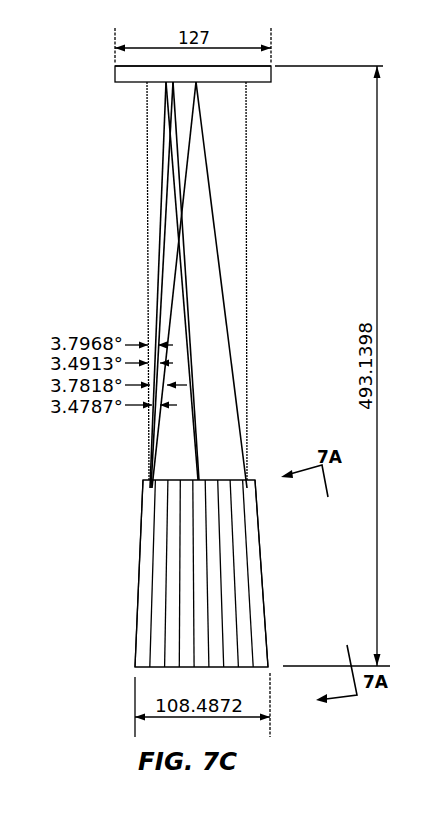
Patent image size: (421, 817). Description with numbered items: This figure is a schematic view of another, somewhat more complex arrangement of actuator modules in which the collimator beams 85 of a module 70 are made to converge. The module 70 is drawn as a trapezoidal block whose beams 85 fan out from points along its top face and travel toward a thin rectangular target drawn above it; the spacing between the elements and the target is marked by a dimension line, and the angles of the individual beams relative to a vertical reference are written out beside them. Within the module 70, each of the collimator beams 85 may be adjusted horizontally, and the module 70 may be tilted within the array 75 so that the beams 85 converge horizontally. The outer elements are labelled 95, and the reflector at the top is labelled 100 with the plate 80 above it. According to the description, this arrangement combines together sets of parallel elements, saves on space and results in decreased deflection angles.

The module 70 is at (258, 565).
The array 75 is at (183, 606).
The test target plate 80 is at (110, 60).
The collimator beams 85 is at (185, 128).
The edge transducer elements 95 is at (139, 667).
The reflector 100 is at (105, 75).